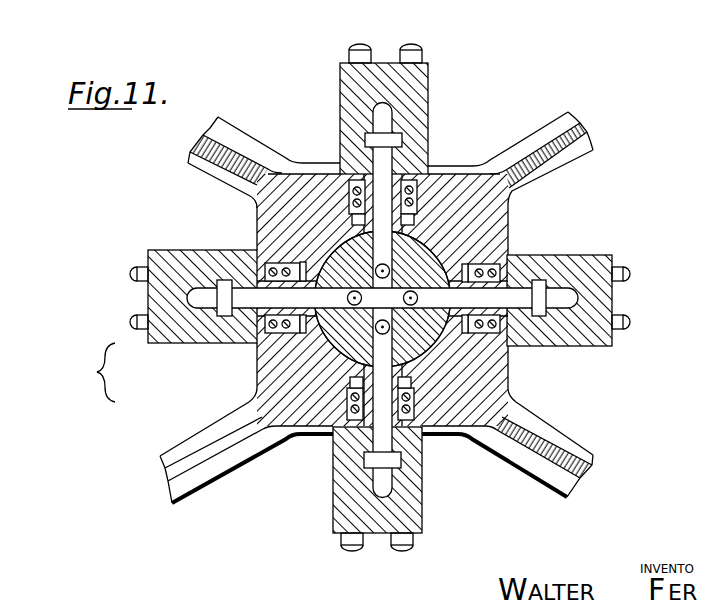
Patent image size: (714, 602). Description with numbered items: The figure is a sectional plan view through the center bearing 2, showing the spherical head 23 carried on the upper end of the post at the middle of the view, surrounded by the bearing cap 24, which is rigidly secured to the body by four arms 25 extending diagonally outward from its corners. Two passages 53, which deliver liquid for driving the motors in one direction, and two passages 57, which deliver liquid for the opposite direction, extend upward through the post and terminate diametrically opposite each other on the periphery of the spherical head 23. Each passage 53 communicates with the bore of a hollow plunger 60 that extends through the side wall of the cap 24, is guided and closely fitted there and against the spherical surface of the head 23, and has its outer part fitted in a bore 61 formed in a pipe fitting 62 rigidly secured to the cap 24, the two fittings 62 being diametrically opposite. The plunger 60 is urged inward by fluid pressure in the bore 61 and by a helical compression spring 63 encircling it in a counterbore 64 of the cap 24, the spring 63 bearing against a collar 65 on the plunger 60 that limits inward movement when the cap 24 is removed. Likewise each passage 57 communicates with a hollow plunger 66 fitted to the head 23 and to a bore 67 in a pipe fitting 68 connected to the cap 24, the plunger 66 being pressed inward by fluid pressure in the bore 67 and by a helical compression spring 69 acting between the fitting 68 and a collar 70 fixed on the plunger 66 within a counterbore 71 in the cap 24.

The center bearing 2 is at (93, 372).
The spherical head 23 is at (383, 299).
The bearing cap 24 is at (272, 205).
The arms 25 is at (232, 128).
The passages 53 is at (380, 299).
The passages 57 is at (382, 297).
The hollow plunger 60 is at (238, 262).
The bore 61 is at (197, 338).
The pipe fitting 62 is at (148, 292).
The helical compression spring 63 is at (275, 263).
The counterbore 64 is at (258, 341).
The collar 65 is at (292, 345).
The hollow plunger 66 is at (420, 157).
The bore 67 is at (398, 134).
The pipe fitting 68 is at (386, 62).
The helical compression spring 69 is at (410, 172).
The collar 70 is at (352, 212).
The counterbore 71 is at (351, 195).